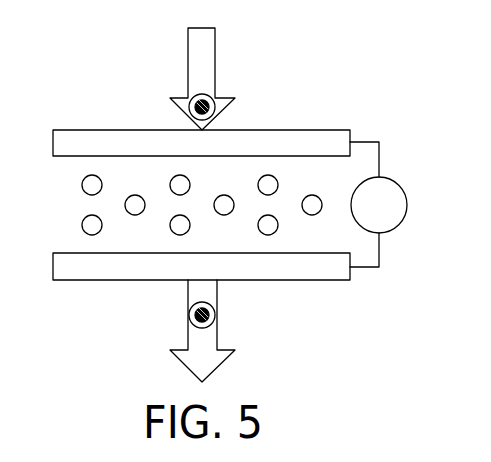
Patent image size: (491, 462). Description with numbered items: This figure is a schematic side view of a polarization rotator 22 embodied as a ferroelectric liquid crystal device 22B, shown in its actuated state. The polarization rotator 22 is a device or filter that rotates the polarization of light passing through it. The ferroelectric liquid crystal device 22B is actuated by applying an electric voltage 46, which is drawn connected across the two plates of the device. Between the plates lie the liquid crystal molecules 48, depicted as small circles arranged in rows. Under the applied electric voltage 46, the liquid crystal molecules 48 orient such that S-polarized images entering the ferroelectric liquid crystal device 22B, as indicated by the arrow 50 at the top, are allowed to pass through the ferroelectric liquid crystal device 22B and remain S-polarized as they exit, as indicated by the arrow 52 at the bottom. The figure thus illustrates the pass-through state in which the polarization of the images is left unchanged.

The polarization rotator 22 is at (112, 72).
The ferroelectric liquid crystal device 22B is at (104, 293).
The electric voltage 46 is at (397, 203).
The liquid crystal molecules 48 is at (135, 205).
The arrow 50 is at (205, 57).
The arrow 52 is at (210, 358).